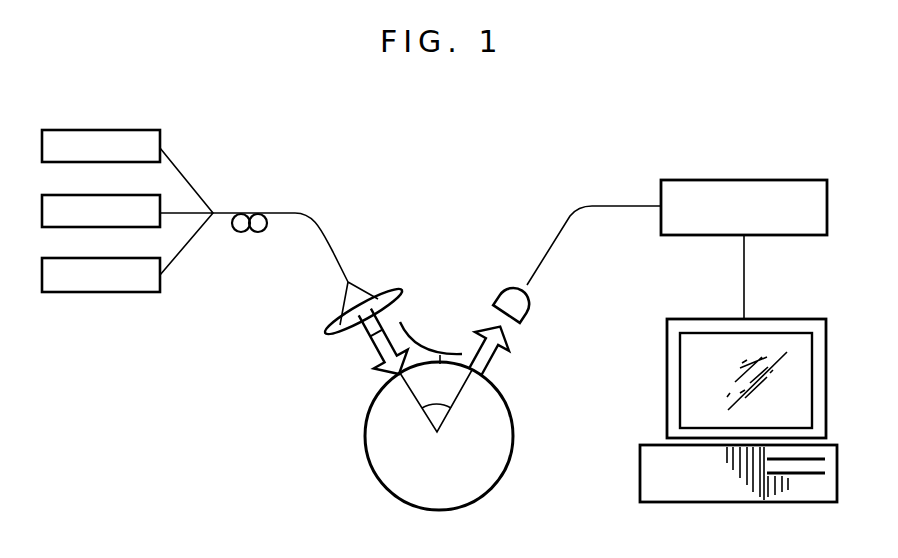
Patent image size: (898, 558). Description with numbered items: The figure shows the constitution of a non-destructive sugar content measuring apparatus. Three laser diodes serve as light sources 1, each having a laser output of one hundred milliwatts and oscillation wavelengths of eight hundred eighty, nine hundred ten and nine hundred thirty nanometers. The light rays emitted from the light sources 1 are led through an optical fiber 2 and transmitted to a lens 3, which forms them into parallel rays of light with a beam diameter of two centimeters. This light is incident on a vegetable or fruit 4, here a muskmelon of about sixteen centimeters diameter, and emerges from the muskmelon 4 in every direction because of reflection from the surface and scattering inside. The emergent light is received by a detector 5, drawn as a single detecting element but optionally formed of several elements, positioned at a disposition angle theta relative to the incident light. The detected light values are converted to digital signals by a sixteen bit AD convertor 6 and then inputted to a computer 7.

The light sources 1 is at (135, 130).
The optical fiber 2 is at (264, 212).
The lens 3 is at (386, 291).
The vegetable or fruit (muskmelon) 4 is at (376, 478).
The detector 5 is at (503, 284).
The AD convertor 6 is at (808, 180).
The computer 7 is at (799, 319).